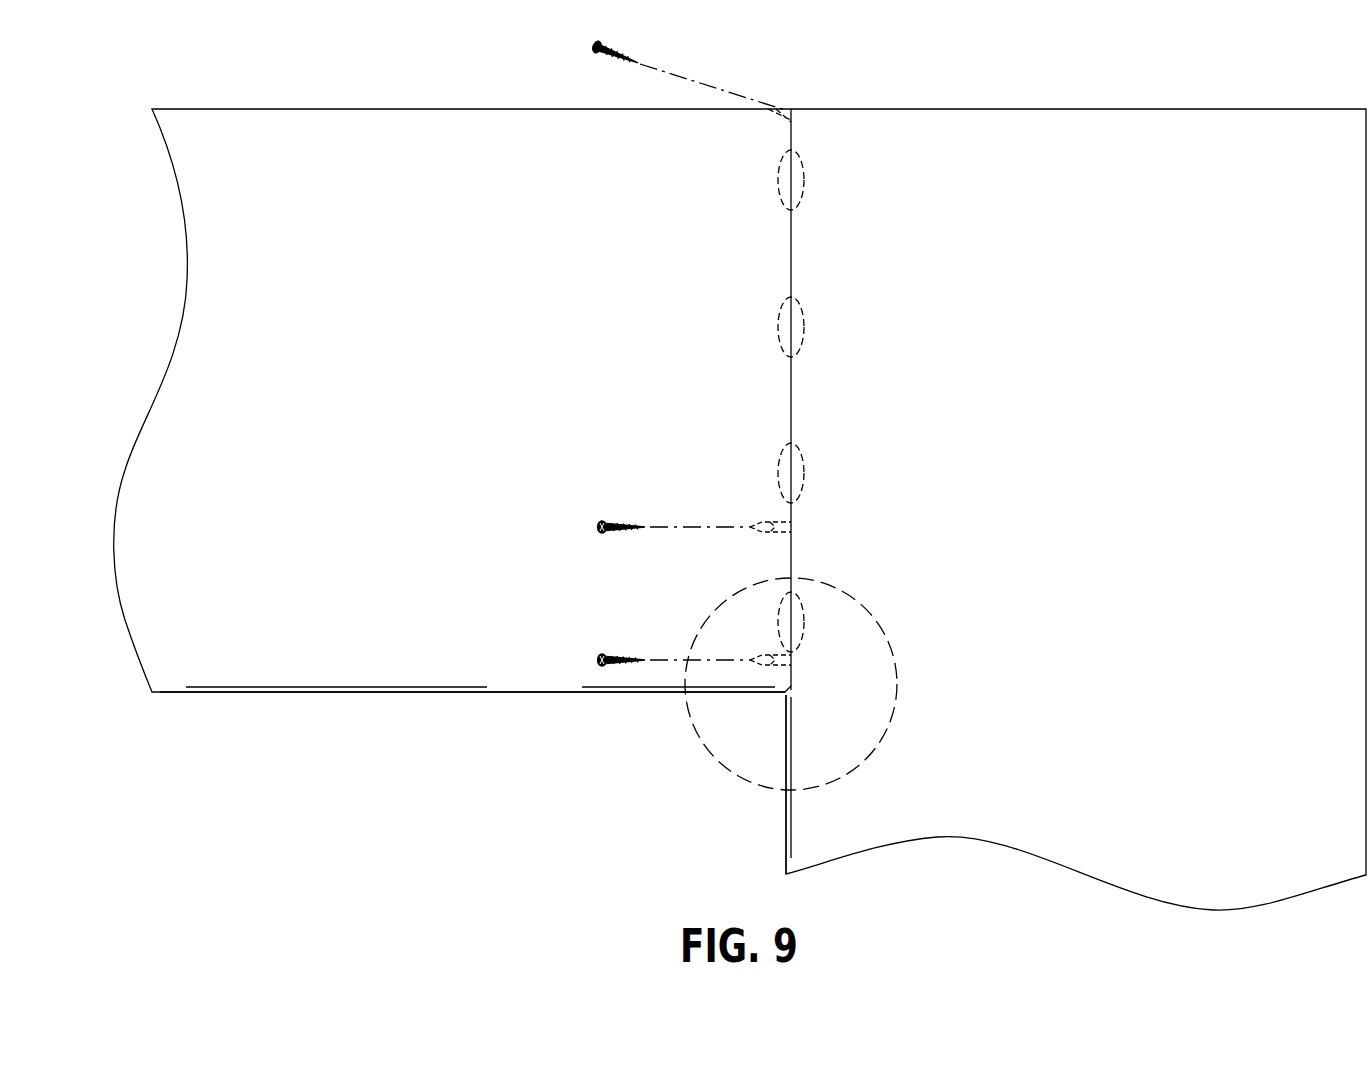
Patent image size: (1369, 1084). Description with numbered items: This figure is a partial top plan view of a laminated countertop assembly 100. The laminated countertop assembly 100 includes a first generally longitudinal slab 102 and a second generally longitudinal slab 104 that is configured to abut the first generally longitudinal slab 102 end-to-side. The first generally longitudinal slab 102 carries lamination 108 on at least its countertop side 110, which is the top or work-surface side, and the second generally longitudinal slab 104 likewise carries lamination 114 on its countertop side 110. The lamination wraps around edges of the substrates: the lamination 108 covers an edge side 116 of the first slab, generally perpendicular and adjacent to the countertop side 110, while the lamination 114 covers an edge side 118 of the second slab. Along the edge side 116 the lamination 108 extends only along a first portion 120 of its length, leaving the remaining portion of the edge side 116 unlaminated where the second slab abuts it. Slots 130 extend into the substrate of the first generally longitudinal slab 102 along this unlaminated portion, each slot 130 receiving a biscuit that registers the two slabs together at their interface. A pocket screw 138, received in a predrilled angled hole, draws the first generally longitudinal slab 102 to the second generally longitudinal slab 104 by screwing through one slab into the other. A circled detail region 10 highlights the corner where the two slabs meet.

The laminated countertop assembly 100 is at (132, 172).
The first generally longitudinal slab 102 is at (1175, 107).
The second generally longitudinal slab 104 is at (283, 106).
The lamination 108 is at (1035, 128).
The countertop side 110 is at (388, 128).
The lamination 114 is at (547, 668).
The edge side 116 is at (787, 848).
The edge side 118 is at (371, 690).
The first portion 120 is at (788, 803).
The slots 130 is at (805, 145).
The pocket screw 138 is at (603, 58).
The joint detail region 10 is at (690, 717).